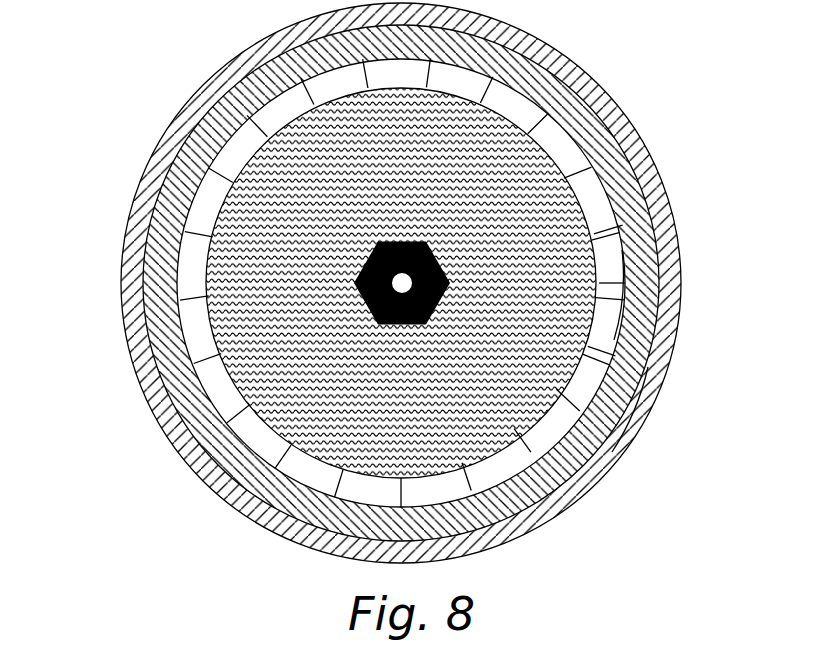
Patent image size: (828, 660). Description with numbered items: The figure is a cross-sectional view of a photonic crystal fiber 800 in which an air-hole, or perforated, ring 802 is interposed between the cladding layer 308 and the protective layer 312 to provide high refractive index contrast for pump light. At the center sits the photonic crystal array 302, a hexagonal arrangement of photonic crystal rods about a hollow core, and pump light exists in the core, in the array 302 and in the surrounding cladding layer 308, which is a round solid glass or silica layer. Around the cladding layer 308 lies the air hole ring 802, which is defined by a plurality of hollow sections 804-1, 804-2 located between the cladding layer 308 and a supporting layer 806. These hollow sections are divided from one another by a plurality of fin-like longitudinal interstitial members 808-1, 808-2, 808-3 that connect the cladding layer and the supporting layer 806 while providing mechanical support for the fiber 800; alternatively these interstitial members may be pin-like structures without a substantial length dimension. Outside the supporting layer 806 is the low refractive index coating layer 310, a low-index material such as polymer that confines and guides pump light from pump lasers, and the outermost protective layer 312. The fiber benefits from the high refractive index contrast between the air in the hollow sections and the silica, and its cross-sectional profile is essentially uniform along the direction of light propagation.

The photonic crystal fiber 800 is at (150, 38).
The photonic crystal array 302 is at (358, 311).
The cladding layer 308 is at (337, 218).
The low refractive index coating layer 310 is at (575, 82).
The protective layer 312 is at (640, 258).
The air-hole ring 802 is at (660, 195).
The hollow section 804-1 is at (620, 323).
The hollow section 804-2 is at (630, 413).
The supporting layer 806 is at (590, 467).
The interstitial member 808-1 is at (615, 240).
The interstitial member 808-2 is at (613, 293).
The interstitial member 808-3 is at (593, 394).